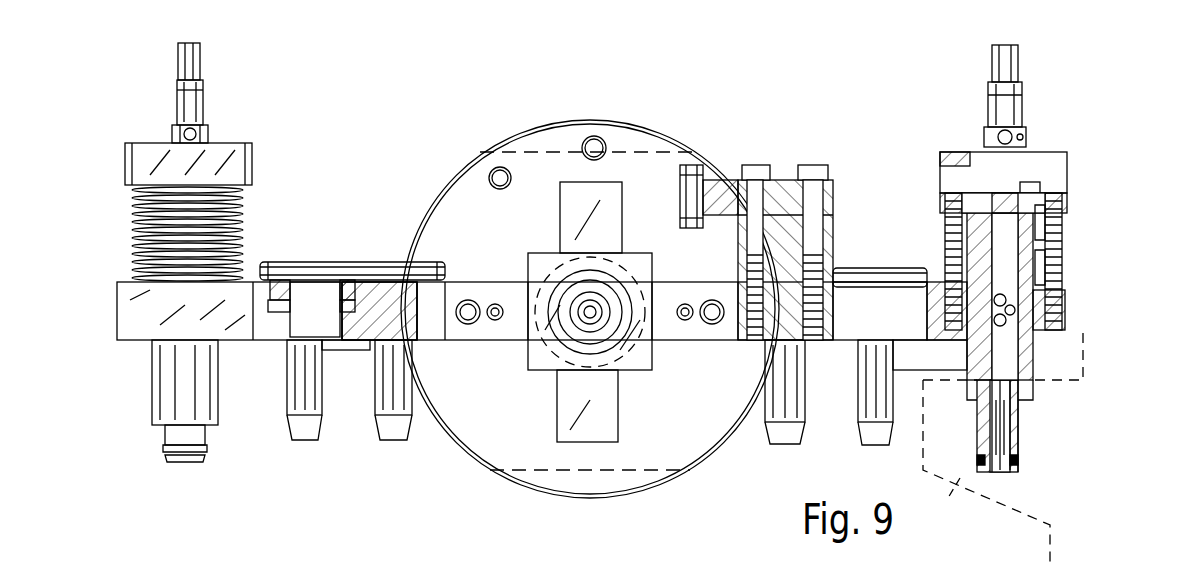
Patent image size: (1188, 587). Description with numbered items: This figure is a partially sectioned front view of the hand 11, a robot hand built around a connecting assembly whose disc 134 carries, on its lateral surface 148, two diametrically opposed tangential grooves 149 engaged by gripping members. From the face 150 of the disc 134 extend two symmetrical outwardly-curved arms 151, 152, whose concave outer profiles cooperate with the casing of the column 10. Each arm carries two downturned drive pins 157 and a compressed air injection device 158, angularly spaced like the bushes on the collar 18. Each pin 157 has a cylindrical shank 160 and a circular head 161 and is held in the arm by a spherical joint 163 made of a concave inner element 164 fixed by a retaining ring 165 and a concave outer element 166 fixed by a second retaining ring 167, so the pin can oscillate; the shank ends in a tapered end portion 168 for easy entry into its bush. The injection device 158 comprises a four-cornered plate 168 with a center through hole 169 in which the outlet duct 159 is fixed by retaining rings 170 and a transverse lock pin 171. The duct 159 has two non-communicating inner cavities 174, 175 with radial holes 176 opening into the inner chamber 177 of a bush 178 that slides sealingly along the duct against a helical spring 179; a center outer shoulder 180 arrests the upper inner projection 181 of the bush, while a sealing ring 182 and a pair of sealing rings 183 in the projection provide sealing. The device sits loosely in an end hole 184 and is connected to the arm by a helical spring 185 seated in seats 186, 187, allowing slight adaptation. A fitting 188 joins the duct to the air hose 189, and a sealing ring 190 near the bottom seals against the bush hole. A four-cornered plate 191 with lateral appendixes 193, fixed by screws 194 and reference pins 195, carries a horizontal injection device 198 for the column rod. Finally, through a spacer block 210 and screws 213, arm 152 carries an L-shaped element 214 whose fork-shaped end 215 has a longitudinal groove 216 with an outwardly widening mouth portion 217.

The column 10 is at (1048, 538).
The hand 11 is at (375, 510).
The collar 18 is at (1003, 448).
The disc 134 is at (472, 160).
The lateral surface 148 is at (652, 135).
The tangential grooves 149 is at (560, 122).
The face 150 is at (450, 225).
The arm 151 is at (358, 290).
The arm 152 is at (879, 210).
The drive pins 157 is at (305, 440).
The compressed air injection device 158 is at (135, 385).
The outlet duct 159 is at (165, 398).
The shank 160 is at (295, 360).
The head 161 is at (302, 262).
The spherical joint 163 is at (285, 335).
The concave inner element 164 is at (345, 283).
The retaining ring 165 is at (355, 340).
The concave outer element 166 is at (330, 325).
The second retaining ring 167 is at (335, 340).
The four-cornered plate 168 is at (145, 155).
The center through hole 169 is at (283, 335).
The retaining rings 170 is at (208, 140).
The transverse lock pin 171 is at (960, 160).
The inner cavity 174 is at (1065, 248).
The inner cavity 175 is at (1020, 437).
The radial holes 176 is at (1005, 320).
The inner chamber 177 is at (1065, 280).
The bush 178 is at (160, 358).
The helical spring 179 is at (1065, 235).
The center outer shoulder 180 is at (925, 310).
The upper inner projection 181 is at (950, 250).
The sealing ring 182 is at (990, 412).
The sealing rings 183 is at (1065, 228).
The end hole 184 is at (968, 350).
The helical spring 185 is at (133, 200).
The seat 186 is at (1067, 185).
The seat 187 is at (1065, 305).
The fitting 188 is at (180, 110).
The hose 189 is at (203, 58).
The sealing ring 190 is at (165, 448).
The four-cornered plate 191 is at (588, 318).
The lateral appendixes 193 is at (488, 325).
The screws 194 is at (470, 300).
The reference pins 195 is at (496, 303).
The injection device 198 is at (625, 350).
The spacer block 210 is at (855, 300).
The screws 213 is at (775, 170).
The L-shaped element 214 is at (835, 195).
The fork-shaped end 215 is at (690, 175).
The longitudinal groove 216 is at (720, 185).
The mouth portion 217 is at (700, 195).